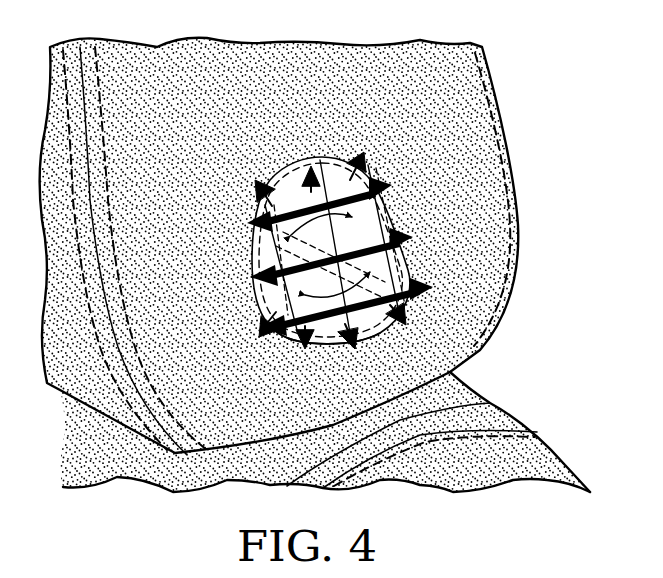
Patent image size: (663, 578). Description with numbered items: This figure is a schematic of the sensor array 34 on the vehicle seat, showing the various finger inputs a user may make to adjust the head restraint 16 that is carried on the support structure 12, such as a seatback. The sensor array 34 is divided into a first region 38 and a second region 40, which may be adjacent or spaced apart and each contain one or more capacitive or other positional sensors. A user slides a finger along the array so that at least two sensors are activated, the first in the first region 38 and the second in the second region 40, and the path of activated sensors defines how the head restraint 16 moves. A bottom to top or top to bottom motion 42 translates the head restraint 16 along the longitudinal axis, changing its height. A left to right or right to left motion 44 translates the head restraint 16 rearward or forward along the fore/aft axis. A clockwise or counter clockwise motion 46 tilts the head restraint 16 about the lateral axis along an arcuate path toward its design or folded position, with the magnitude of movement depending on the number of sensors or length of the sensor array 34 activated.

The support structure 12 is at (555, 442).
The head restraint 16 is at (505, 148).
The sensor array 34 is at (405, 262).
The first region 38 is at (333, 350).
The second region 40 is at (322, 157).
The bottom to top motion 42 is at (300, 176).
The left to right motion 44 is at (255, 276).
The clockwise motion 46 is at (383, 212).